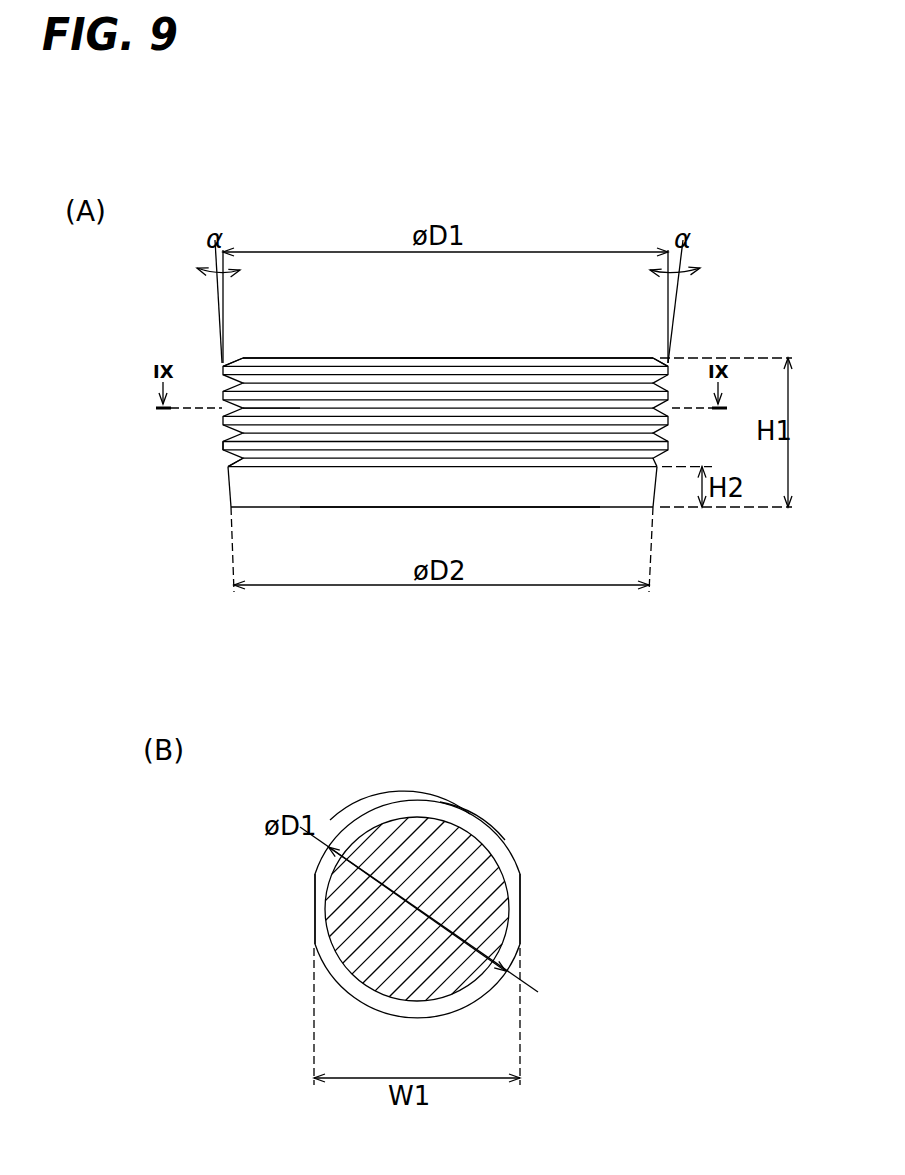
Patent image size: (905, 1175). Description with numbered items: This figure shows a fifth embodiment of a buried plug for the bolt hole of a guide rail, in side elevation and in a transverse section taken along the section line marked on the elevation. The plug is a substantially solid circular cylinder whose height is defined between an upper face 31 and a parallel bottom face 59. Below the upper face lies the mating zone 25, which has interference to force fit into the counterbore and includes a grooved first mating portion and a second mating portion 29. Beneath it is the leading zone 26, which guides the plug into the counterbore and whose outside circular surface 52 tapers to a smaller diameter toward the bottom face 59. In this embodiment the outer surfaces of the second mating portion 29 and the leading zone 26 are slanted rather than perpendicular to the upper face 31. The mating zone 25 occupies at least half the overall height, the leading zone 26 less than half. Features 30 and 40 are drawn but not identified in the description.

The mating zone 25 is at (445, 412).
The leading zone 26 is at (337, 493).
The second mating portion 29 is at (313, 900).
The flat side surface 30 is at (313, 917).
The upper face 31 is at (345, 357).
The chamfered corner 40 is at (223, 392).
The outside circular surface 52 is at (230, 490).
The bottom face 59 is at (483, 507).